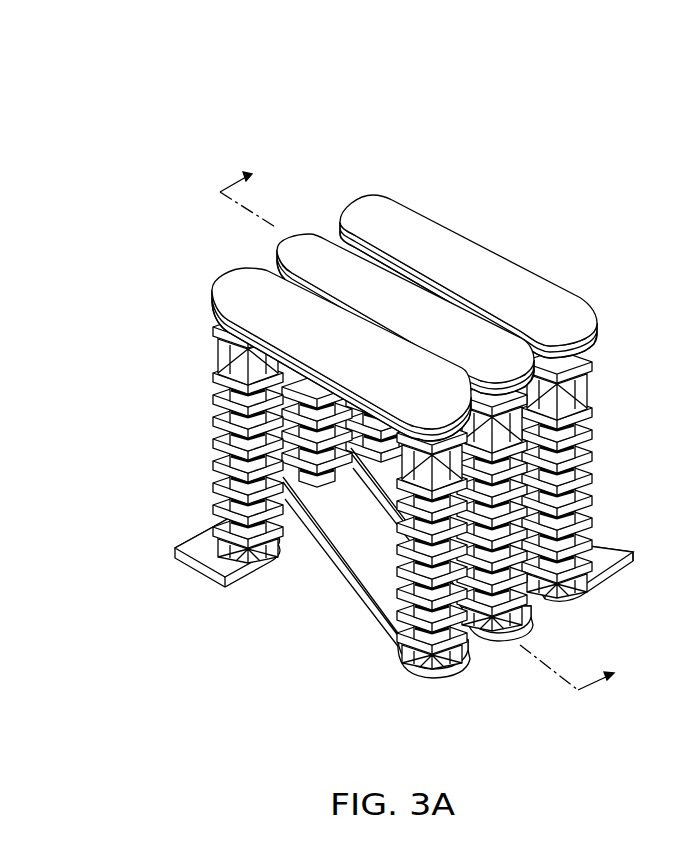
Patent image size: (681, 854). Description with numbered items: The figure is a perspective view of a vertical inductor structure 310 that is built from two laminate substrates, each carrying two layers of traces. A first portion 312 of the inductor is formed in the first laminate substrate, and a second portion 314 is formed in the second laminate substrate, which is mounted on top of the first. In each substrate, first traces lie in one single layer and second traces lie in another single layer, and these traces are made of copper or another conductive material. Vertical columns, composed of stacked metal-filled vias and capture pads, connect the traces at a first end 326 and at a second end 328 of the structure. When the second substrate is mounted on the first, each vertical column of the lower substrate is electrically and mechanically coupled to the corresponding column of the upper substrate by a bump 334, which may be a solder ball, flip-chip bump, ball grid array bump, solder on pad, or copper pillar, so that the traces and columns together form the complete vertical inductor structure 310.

The vertical inductor structure 310 is at (412, 106).
The first portion 312 is at (184, 507).
The second portion 314 is at (184, 367).
The first end 326 is at (299, 317).
The second end 328 is at (462, 668).
The bump 334 is at (584, 458).